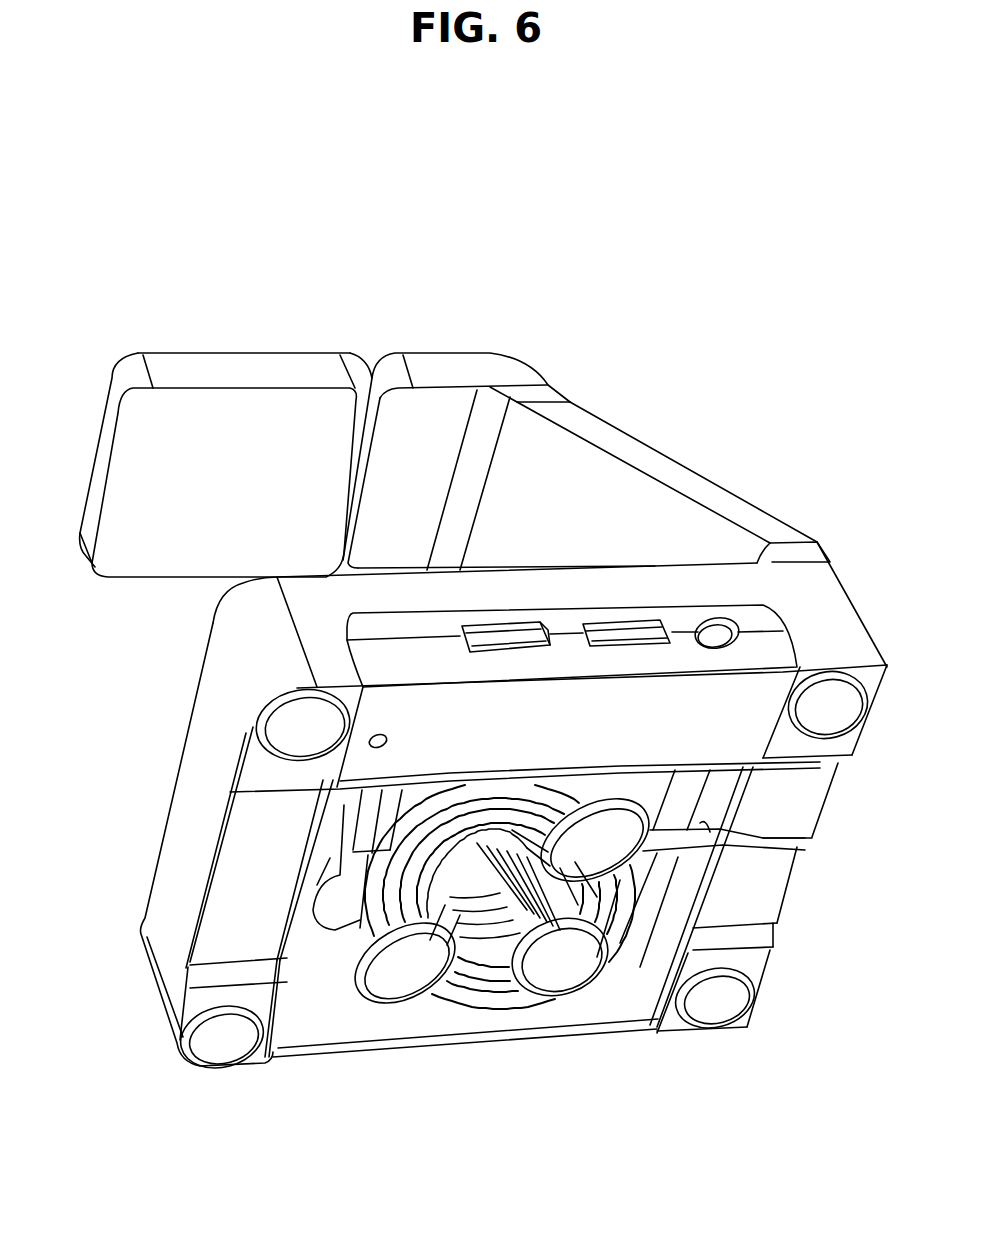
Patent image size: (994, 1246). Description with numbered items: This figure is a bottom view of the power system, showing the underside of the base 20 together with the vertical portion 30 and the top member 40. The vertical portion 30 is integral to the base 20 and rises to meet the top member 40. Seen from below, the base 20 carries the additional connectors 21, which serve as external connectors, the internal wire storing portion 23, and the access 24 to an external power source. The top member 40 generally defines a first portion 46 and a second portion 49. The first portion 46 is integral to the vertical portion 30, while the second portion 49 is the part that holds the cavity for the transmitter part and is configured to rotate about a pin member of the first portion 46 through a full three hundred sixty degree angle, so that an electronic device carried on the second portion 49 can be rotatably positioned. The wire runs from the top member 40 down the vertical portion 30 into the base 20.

The base 20 is at (860, 610).
The connectors 21 is at (617, 622).
The internal wire storing portion 23 is at (320, 933).
The access 24 is at (711, 620).
The vertical portion 30 is at (680, 460).
The top member 40 is at (100, 430).
The first portion 46 is at (458, 353).
The second portion 49 is at (230, 357).